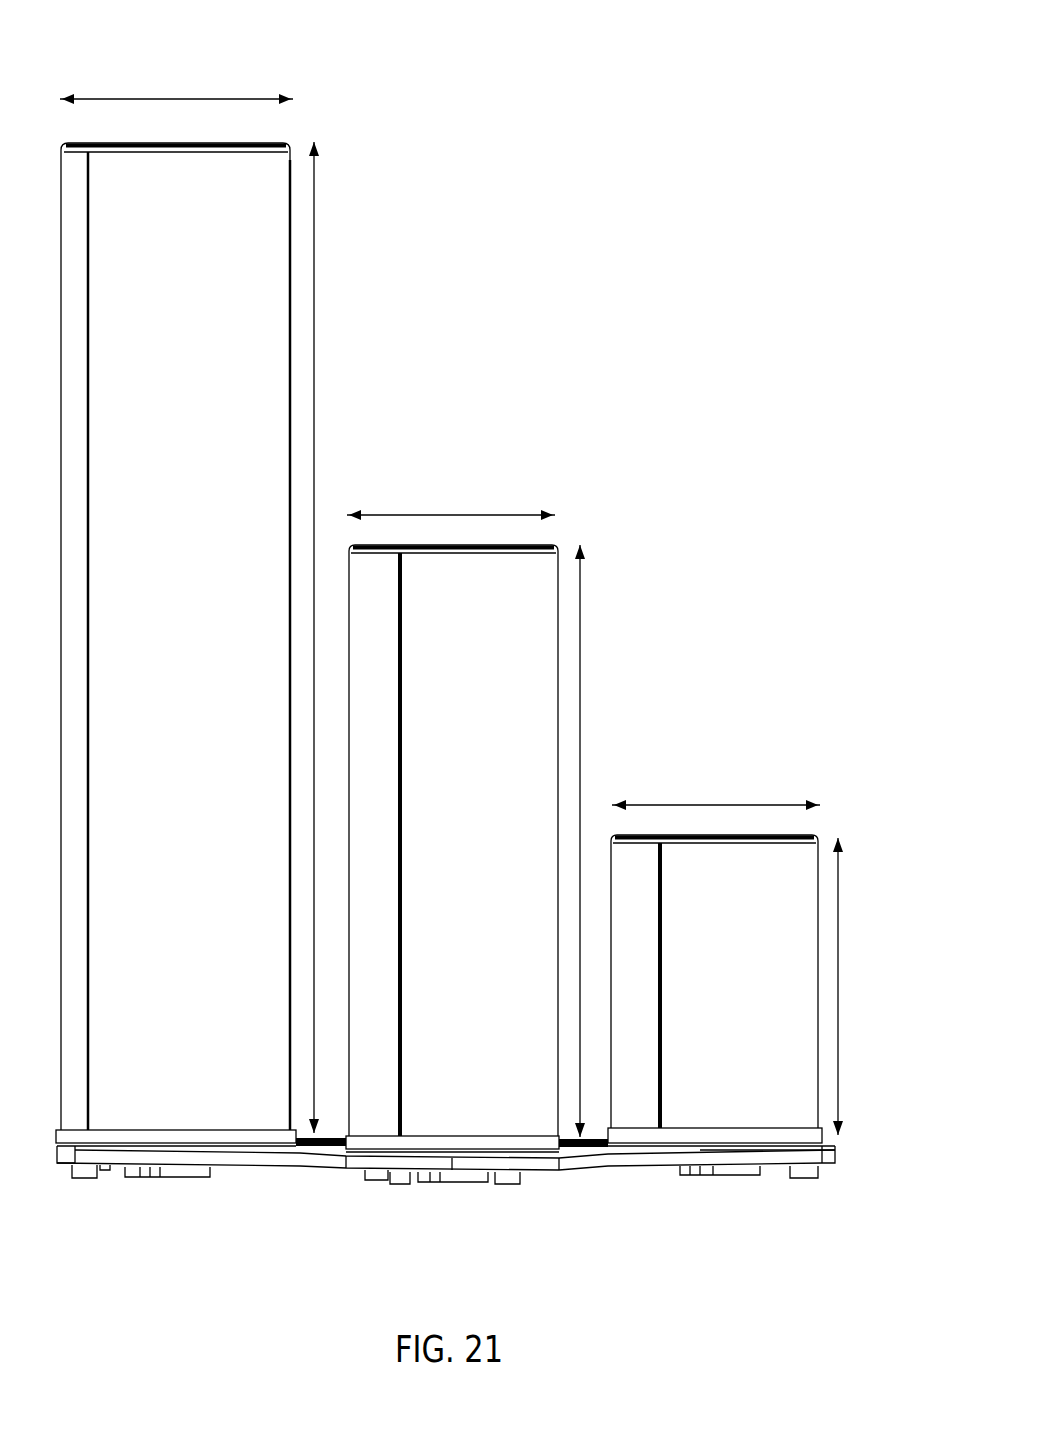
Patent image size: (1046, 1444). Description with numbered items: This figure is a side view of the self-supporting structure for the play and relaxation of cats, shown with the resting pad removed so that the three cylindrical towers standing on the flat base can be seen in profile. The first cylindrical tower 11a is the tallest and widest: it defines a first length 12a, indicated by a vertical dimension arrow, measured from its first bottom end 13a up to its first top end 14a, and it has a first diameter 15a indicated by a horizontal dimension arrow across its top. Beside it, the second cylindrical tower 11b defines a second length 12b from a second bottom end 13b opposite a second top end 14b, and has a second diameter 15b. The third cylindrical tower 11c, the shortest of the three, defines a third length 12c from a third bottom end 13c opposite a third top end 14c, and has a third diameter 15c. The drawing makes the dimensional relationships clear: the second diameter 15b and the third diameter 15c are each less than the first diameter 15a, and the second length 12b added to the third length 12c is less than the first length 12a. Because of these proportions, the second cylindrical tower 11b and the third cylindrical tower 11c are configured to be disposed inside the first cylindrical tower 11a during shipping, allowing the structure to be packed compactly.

The first cylindrical tower 11a is at (206, 640).
The second cylindrical tower 11b is at (494, 859).
The third cylindrical tower 11c is at (753, 1010).
The first length 12a is at (314, 305).
The second length 12b is at (580, 672).
The third length 12c is at (838, 988).
The first bottom end 13a is at (207, 1060).
The second bottom end 13b is at (498, 1094).
The third bottom end 13c is at (751, 1122).
The first top end 14a is at (206, 247).
The second top end 14b is at (491, 639).
The third top end 14c is at (752, 897).
The first diameter 15a is at (178, 99).
The second diameter 15b is at (450, 515).
The third diameter 15c is at (717, 805).